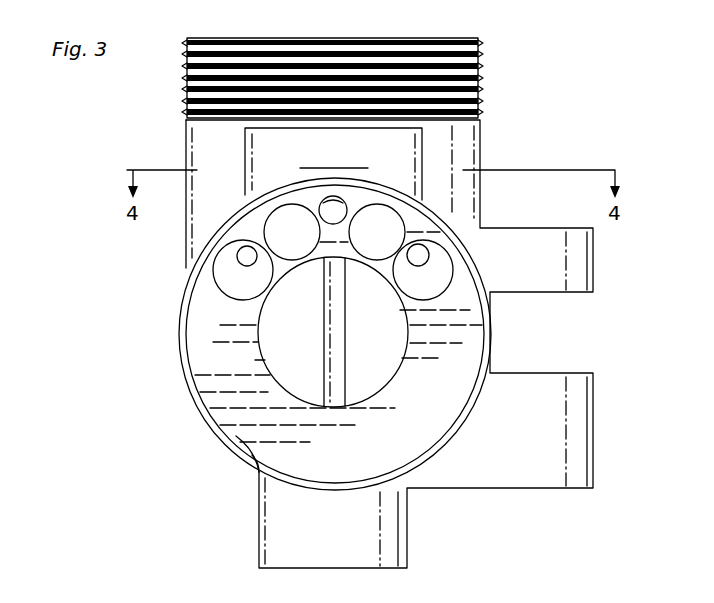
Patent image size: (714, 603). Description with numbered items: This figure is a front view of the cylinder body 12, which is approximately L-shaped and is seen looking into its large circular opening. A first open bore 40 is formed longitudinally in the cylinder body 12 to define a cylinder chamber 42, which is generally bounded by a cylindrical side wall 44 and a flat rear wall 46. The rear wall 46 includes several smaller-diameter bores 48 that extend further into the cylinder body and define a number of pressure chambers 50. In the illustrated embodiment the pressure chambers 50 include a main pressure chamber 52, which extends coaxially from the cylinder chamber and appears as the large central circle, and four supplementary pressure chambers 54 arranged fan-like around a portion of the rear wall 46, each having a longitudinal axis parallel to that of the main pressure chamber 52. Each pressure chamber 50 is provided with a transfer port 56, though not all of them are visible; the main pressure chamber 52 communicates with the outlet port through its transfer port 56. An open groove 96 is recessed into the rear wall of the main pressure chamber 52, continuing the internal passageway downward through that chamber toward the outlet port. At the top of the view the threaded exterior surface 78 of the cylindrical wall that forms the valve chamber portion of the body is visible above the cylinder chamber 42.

The exterior surface 78 is at (478, 82).
The cylinder body 12 is at (186, 152).
The first open bore 40 is at (194, 344).
The cylinder chamber 42 is at (207, 392).
The supplementary pressure chambers 54 is at (268, 216).
The transfer port 56 is at (246, 262).
The main pressure chamber 52 is at (280, 388).
The open groove 96 is at (323, 332).
The smaller-diameter bores 48 is at (400, 226).
The pressure chambers 50 is at (394, 224).
The rear wall 46 is at (390, 449).
The cylindrical side wall 44 is at (226, 432).